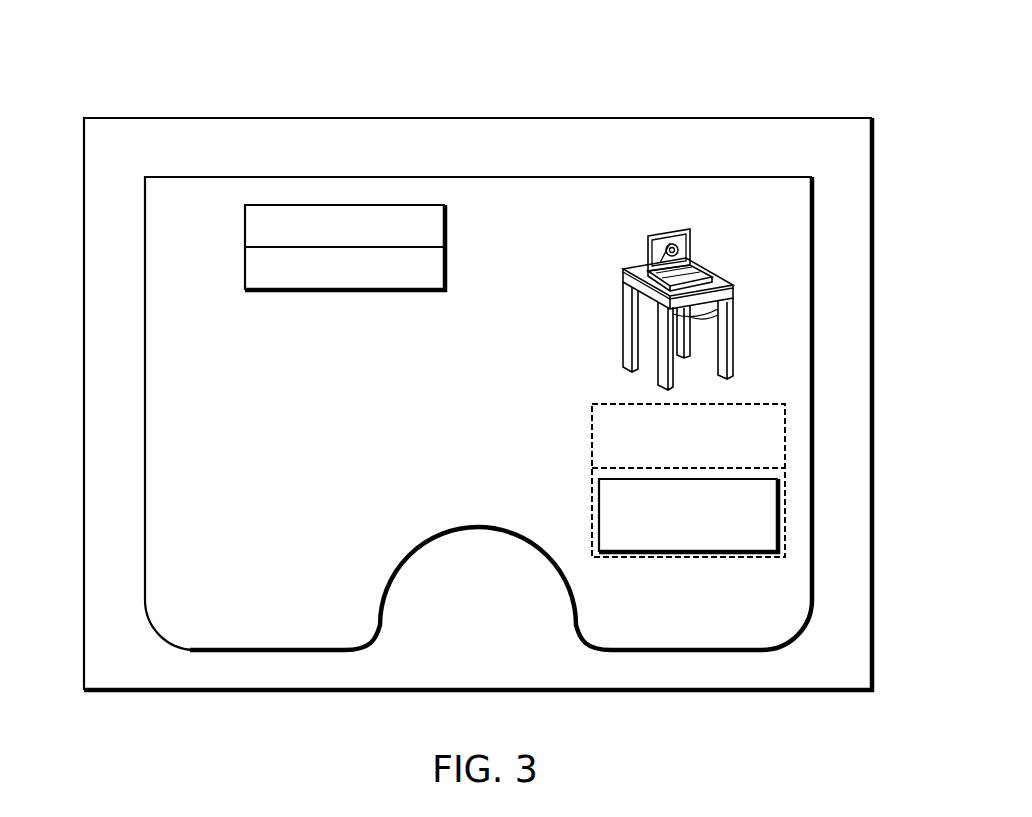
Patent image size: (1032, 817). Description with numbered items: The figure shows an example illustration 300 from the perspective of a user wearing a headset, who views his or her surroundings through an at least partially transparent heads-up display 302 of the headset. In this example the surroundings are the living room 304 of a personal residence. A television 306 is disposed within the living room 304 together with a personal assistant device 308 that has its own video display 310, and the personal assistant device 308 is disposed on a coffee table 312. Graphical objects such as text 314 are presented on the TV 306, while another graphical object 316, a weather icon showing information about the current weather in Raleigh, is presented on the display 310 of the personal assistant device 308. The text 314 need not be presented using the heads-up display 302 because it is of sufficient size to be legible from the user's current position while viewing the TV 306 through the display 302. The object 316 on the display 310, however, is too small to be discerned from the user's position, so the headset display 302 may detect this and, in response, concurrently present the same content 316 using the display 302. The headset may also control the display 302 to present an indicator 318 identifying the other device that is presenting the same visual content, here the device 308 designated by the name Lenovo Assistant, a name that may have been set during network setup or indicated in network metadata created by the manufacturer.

The example illustration 300 is at (100, 70).
The heads-up display 302 is at (145, 453).
The living room 304 is at (84, 362).
The television 306 is at (245, 268).
The personal assistant device 308 is at (648, 251).
The video display 310 is at (726, 223).
The coffee table 312 is at (622, 273).
The text 314 is at (245, 228).
The graphical object 316 is at (682, 246).
The indicator 318 is at (592, 435).